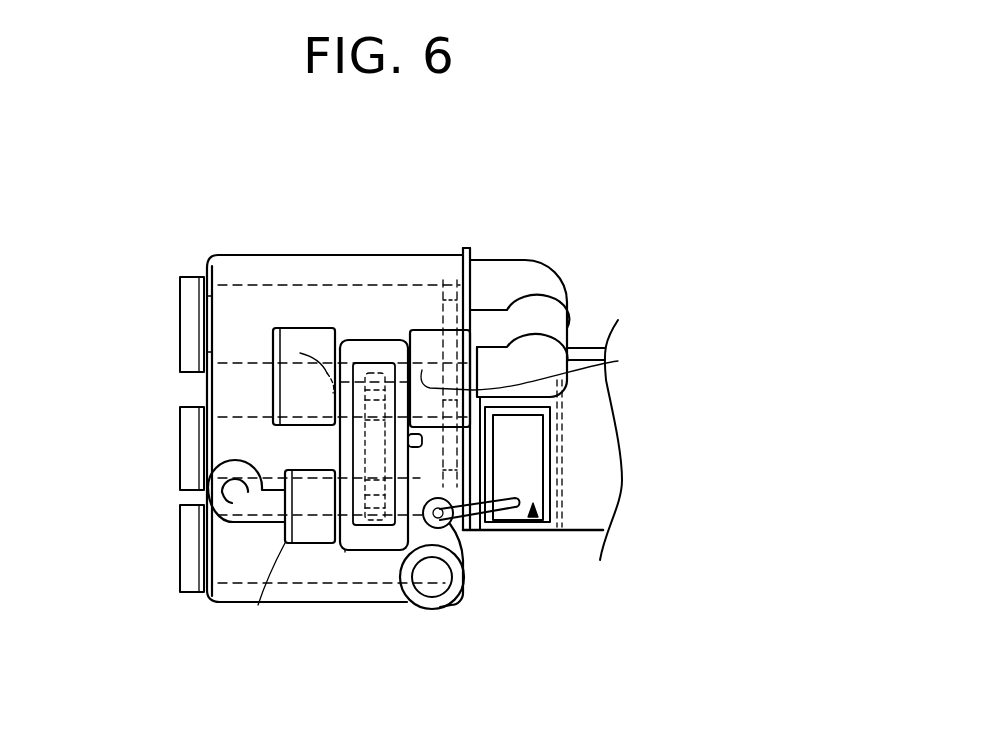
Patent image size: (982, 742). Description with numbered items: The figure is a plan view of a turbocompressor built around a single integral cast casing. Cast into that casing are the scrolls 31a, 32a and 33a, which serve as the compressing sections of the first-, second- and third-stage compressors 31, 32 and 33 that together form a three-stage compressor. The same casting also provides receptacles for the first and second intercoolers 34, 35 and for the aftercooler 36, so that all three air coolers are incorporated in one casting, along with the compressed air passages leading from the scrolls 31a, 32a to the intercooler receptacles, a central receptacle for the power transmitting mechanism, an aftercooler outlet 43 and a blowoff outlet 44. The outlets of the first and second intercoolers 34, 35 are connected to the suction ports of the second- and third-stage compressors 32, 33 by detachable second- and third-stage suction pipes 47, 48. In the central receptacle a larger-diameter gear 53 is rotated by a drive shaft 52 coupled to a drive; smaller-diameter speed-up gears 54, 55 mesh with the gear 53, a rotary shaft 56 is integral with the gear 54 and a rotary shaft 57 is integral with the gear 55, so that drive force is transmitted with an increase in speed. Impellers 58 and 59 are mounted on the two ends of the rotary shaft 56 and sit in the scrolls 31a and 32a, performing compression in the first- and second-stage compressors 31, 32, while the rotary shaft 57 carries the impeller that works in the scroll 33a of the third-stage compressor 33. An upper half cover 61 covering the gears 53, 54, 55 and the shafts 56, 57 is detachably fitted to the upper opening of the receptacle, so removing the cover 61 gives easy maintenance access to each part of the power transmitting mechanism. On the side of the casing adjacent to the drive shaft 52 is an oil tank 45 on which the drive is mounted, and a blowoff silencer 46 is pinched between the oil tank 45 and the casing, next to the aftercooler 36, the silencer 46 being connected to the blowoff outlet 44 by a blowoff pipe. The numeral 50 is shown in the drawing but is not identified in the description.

The first-stage compressor 31 is at (288, 328).
The scroll 31a is at (328, 330).
The second-stage compressor 32 is at (425, 333).
The scroll 32a is at (432, 328).
The third-stage compressor 33 is at (290, 552).
The scroll 33a is at (323, 545).
The first intercooler 34 is at (242, 288).
The second intercooler 35 is at (237, 417).
The aftercooler 36 is at (224, 586).
The aftercooler outlet 43 is at (433, 592).
The blowoff outlet 44 is at (470, 540).
The oil tank 45 is at (598, 493).
The blowoff silencer 46 is at (534, 517).
The second-stage suction pipe 47 is at (528, 258).
The third-stage suction pipe 48 is at (232, 503).
The gap 50 is at (258, 605).
The drive shaft 52 is at (423, 440).
The larger-diameter gear 53 is at (415, 440).
The speed-up gear 54 is at (378, 363).
The speed-up gear 55 is at (372, 552).
The rotary shaft 56 is at (355, 375).
The rotary shaft 57 is at (345, 552).
The impeller 58 is at (300, 353).
The impeller 59 is at (618, 361).
The upper half cover 61 is at (393, 548).